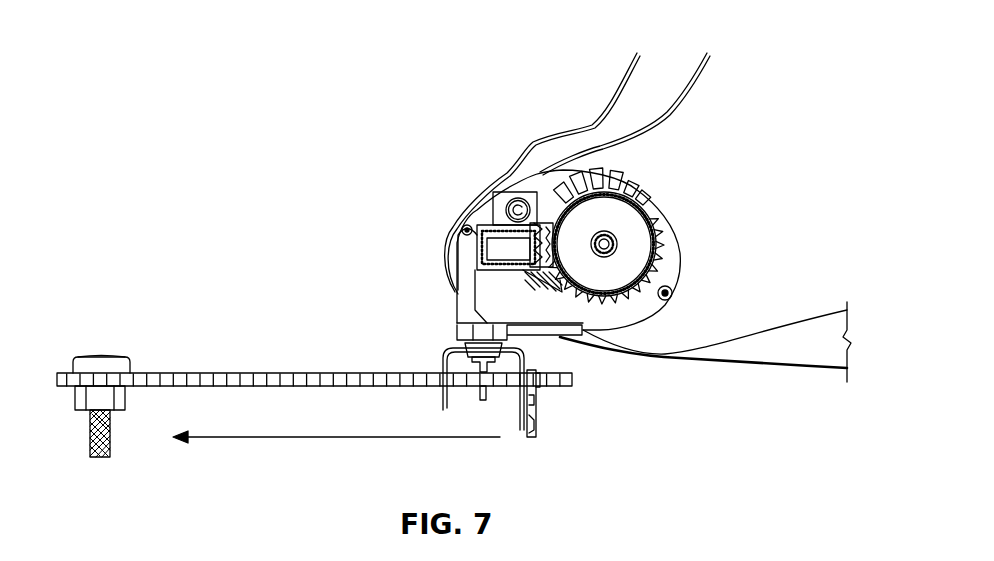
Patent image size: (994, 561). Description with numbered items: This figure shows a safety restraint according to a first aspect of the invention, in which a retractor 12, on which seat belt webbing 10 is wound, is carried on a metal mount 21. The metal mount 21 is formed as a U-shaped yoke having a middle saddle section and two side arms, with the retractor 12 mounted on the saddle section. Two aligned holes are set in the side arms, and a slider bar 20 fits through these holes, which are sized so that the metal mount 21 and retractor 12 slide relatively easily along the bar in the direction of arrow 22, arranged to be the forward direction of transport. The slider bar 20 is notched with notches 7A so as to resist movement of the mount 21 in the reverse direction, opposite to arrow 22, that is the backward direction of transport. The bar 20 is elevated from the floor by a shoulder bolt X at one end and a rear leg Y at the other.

The notches 7A is at (137, 373).
The seat belt webbing 10 is at (808, 327).
The retractor 12 is at (635, 237).
The slider bar 20 is at (330, 377).
The metal mount 21 is at (441, 402).
The arrow 22 is at (308, 437).
The shoulder bolt X is at (90, 430).
The rear leg Y is at (535, 440).